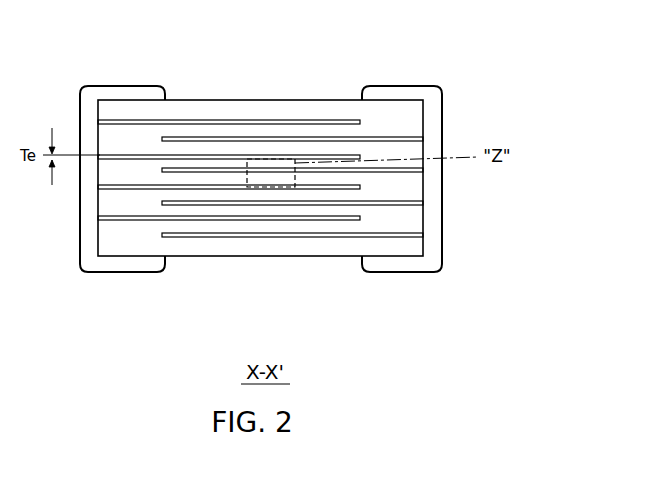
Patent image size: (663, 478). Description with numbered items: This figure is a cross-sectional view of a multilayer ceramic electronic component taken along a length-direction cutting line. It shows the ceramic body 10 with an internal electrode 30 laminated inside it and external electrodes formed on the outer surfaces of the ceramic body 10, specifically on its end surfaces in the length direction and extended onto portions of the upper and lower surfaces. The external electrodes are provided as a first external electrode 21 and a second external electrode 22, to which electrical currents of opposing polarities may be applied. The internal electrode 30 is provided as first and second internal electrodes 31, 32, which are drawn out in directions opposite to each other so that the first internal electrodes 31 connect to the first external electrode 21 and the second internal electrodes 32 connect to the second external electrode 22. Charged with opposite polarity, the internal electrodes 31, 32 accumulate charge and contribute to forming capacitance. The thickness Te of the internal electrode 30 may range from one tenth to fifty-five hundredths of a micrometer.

The ceramic body 10 is at (220, 256).
The first external electrode 21 is at (132, 86).
The second external electrode 22 is at (420, 86).
The internal electrode 30 is at (260, 122).
The first internal electrode 31 is at (206, 157).
The second internal electrode 32 is at (233, 170).